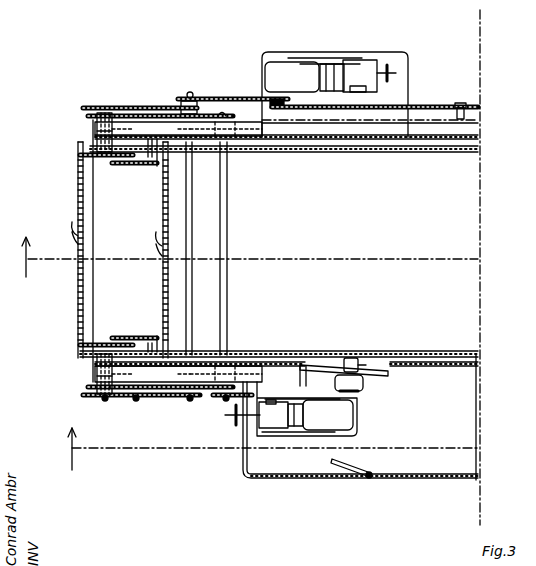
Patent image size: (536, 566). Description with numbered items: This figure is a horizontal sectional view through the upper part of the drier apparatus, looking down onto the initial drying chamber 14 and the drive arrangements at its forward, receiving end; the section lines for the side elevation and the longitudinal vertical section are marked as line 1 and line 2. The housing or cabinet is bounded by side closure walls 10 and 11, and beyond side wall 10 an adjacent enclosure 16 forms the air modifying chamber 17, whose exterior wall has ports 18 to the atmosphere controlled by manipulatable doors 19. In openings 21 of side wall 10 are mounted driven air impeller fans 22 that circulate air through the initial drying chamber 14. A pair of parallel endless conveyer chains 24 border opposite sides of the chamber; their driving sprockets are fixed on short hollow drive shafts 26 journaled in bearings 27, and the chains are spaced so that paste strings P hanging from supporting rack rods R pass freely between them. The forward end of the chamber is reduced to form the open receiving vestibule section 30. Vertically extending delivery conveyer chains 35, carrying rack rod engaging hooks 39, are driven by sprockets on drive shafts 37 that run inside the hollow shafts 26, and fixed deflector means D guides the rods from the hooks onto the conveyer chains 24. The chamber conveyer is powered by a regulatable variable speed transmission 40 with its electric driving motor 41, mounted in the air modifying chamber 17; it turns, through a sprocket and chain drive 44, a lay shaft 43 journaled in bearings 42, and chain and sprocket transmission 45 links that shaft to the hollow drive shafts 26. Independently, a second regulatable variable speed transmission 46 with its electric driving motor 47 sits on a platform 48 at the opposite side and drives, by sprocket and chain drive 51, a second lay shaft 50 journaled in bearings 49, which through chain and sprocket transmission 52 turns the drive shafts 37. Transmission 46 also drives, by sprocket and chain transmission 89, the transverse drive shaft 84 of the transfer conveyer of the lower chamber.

The section line 1— 1 is at (264, 445).
The section line 2— 2 is at (241, 253).
The side closure wall 10 is at (445, 350).
The side closure wall 11 is at (414, 152).
The initial drying chamber 14 is at (427, 290).
The adjacent enclosure 16 is at (406, 480).
The air modifying chamber 17 is at (458, 267).
The ports 18 is at (338, 480).
The manipulatable doors 19 is at (352, 466).
The openings 21 is at (366, 386).
The driven air impeller fans 22 is at (352, 357).
The endless conveyer chains 24 is at (283, 142).
The short hollow drive shafts 26 is at (97, 126).
The bearings 27 is at (97, 131).
The receiving vestibule section 30 is at (135, 287).
The delivery conveyer chains 35 is at (104, 160).
The drive shafts 37 is at (130, 250).
The rack rod engaging and carrying hooks 39 is at (78, 160).
The regulatable variable speed transmission 40 is at (352, 418).
The electric driving motor 41 is at (272, 426).
The bearings 42 is at (228, 130).
The lay shaft 43 is at (228, 214).
The sprocket and chain drive 44 is at (302, 362).
The chain and sprocket transmission 45 is at (140, 106).
The regulatable variable speed transmission 46 is at (276, 66).
The electric driving motor 47 is at (356, 70).
The platform 48 is at (407, 63).
The bearings 49 is at (173, 250).
The second lay shaft 50 is at (192, 245).
The sprocket and chain drive 51 is at (218, 98).
The chain and sprocket transmission 52 is at (160, 114).
The transverse drive shaft 84 is at (465, 116).
The sprocket and chain transmission 89 is at (440, 94).
The fixed deflector means D is at (150, 164).
The paste strings P is at (72, 222).
The supporting rack rods R is at (76, 198).